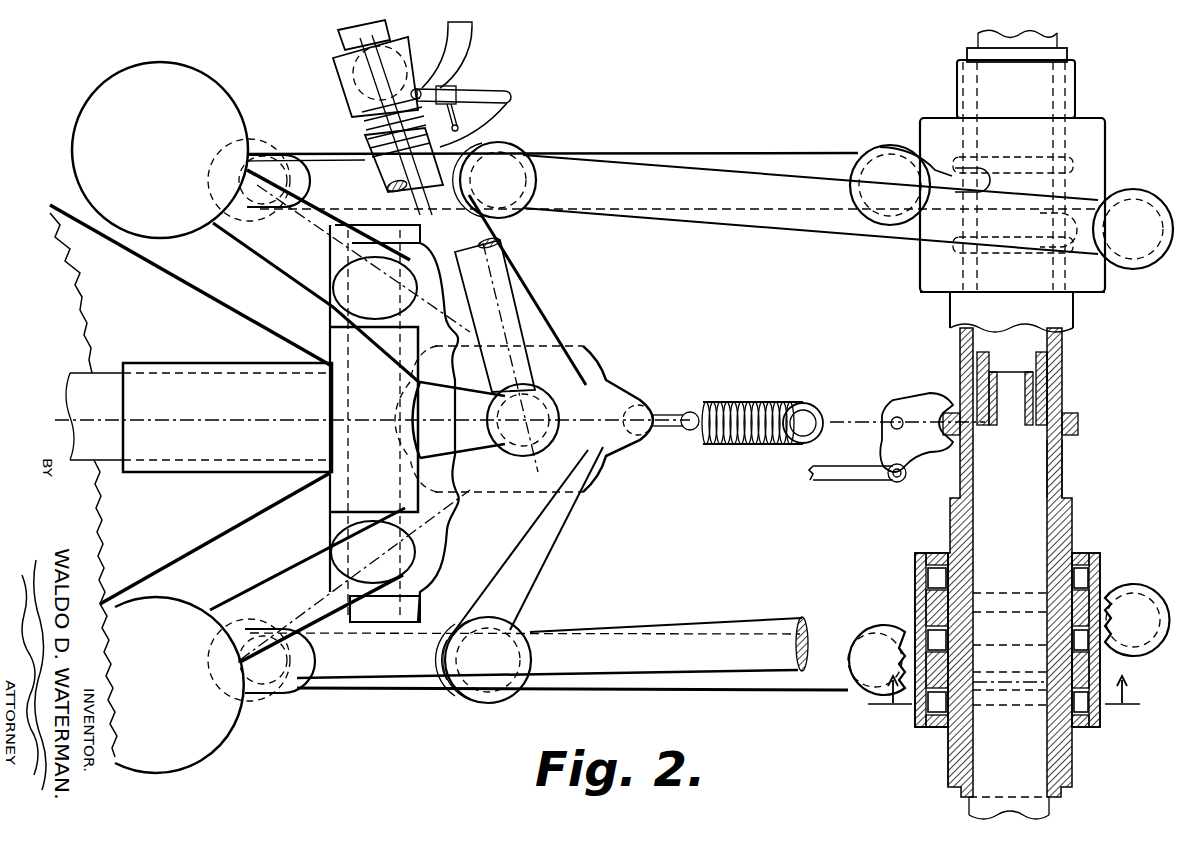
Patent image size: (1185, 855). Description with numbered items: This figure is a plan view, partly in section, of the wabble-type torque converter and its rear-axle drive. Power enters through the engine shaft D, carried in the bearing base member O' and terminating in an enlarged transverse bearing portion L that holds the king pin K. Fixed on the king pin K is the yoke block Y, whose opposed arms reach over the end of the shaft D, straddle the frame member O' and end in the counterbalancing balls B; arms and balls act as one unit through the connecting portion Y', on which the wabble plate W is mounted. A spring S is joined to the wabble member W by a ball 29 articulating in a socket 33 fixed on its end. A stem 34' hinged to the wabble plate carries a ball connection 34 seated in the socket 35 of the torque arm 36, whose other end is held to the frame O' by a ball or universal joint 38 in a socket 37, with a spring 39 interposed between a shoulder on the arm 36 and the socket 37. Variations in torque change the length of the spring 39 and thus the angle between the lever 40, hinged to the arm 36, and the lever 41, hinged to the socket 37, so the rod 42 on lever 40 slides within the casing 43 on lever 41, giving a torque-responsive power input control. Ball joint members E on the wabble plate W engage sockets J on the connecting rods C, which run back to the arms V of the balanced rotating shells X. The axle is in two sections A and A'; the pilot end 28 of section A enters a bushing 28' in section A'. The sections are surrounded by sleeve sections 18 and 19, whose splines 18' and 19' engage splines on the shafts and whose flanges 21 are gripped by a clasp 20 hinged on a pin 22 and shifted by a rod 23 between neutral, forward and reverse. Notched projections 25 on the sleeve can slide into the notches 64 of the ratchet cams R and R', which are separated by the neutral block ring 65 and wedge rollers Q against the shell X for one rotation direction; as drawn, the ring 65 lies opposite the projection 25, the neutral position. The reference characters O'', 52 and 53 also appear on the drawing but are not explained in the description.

The counter balancing balls B is at (122, 90).
The drive shaft D is at (82, 385).
The bearing base member O' is at (176, 389).
The cap O'' is at (336, 35).
The yoke block Y is at (315, 416).
The connecting portion of the yoke block Y' is at (362, 422).
The transverse bearing portion L is at (337, 343).
The king pin K is at (385, 625).
The ball joint members E is at (447, 680).
The sockets J is at (890, 168).
The connecting rods C is at (707, 177).
The arms V is at (942, 172).
The wabble member W is at (540, 552).
The balanced rotating shells X is at (1105, 122).
The spring S is at (763, 403).
The driving axle section A is at (977, 809).
The axle shaft section A' is at (992, 38).
The roller ratchet cam R is at (995, 612).
The roller ratchet cam R' is at (915, 745).
The rollers Q is at (1088, 582).
The sleeve section 18 is at (1031, 571).
The splines 18' is at (1104, 469).
The sleeve section 19 is at (1045, 53).
The splines 19' is at (1103, 388).
The clasp 20 is at (922, 403).
The flanges 21 is at (1078, 418).
The pin 22 is at (897, 415).
The rod 23 is at (838, 476).
The projections 25 is at (937, 608).
The pilot end 28 is at (979, 370).
The bushing 28' is at (1074, 381).
The ball 29 is at (640, 407).
The socket 33 is at (625, 385).
The ball connection 34 is at (522, 360).
The stem 34' is at (453, 435).
The socket 35 is at (558, 408).
The torque arm 36 is at (388, 170).
The socket 37 is at (340, 63).
The ball or universal joint 38 is at (358, 77).
The spring 39 is at (365, 128).
The lever 40 is at (460, 123).
The lever 41 is at (470, 93).
The rod 42 is at (471, 27).
The casing 43 is at (446, 62).
The direction arrow 52 is at (1004, 702).
The bushing 53 is at (1056, 490).
The notches 64 is at (927, 565).
The neutral block ring 65 is at (1075, 727).